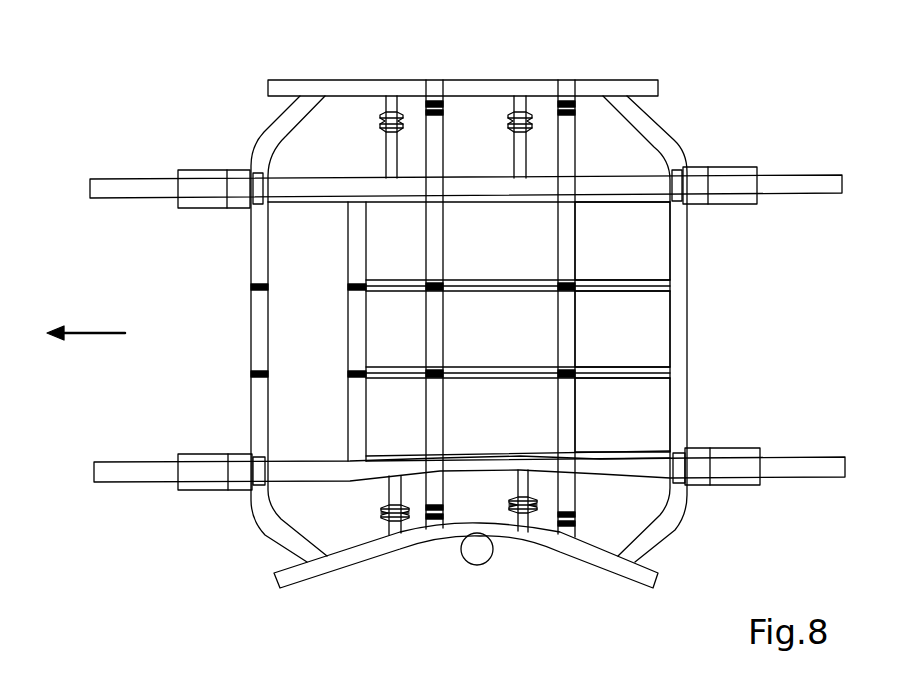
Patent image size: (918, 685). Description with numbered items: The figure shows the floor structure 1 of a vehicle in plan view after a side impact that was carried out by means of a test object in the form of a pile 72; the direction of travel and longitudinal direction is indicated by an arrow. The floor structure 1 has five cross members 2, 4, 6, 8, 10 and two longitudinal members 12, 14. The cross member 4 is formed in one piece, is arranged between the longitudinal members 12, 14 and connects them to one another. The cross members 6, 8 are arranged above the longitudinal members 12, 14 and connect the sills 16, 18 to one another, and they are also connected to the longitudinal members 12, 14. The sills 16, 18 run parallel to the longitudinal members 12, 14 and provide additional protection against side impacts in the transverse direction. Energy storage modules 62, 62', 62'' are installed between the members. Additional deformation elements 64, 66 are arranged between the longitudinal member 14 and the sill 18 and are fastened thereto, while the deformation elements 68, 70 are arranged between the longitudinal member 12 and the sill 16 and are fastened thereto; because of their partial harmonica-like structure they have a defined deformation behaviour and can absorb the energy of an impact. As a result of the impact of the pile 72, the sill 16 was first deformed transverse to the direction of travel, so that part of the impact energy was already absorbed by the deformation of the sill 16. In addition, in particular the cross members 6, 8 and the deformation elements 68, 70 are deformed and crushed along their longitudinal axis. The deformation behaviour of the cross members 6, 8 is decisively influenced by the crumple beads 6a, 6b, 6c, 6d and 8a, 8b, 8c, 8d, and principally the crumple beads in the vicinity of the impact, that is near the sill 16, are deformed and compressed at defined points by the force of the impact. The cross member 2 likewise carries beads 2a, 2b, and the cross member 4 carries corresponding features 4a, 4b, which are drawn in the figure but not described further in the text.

The floor structure 1 is at (190, 108).
The cross member 2 is at (258, 410).
The crumple bead 2a is at (251, 371).
The crumple bead 2b is at (251, 284).
The cross member 4 is at (355, 410).
The lower clamp of second bar 4a is at (348, 371).
The upper clamp of second bar 4b is at (348, 284).
The cross member 6 is at (432, 90).
The crumple bead 6a is at (443, 510).
The crumple bead 6b is at (443, 370).
The crumple bead 6c is at (443, 283).
The crumple bead 6d is at (443, 116).
The cross member 8 is at (565, 88).
The crumple bead 8a is at (575, 520).
The crumple bead 8b is at (575, 370).
The crumple bead 8c is at (575, 283).
The crumple bead 8d is at (575, 116).
The cross member 10 is at (683, 414).
The longitudinal member 12 is at (344, 468).
The longitudinal member 14 is at (335, 186).
The sill 16 is at (291, 578).
The sill 18 is at (278, 88).
The energy storage module 62 is at (663, 241).
The energy storage module 62' is at (667, 329).
The energy storage module 62'' is at (670, 407).
The deformation element 64 is at (517, 105).
The deformation element 66 is at (390, 106).
The deformation element 68 is at (395, 527).
The deformation element 70 is at (524, 522).
The pile 72 is at (473, 553).